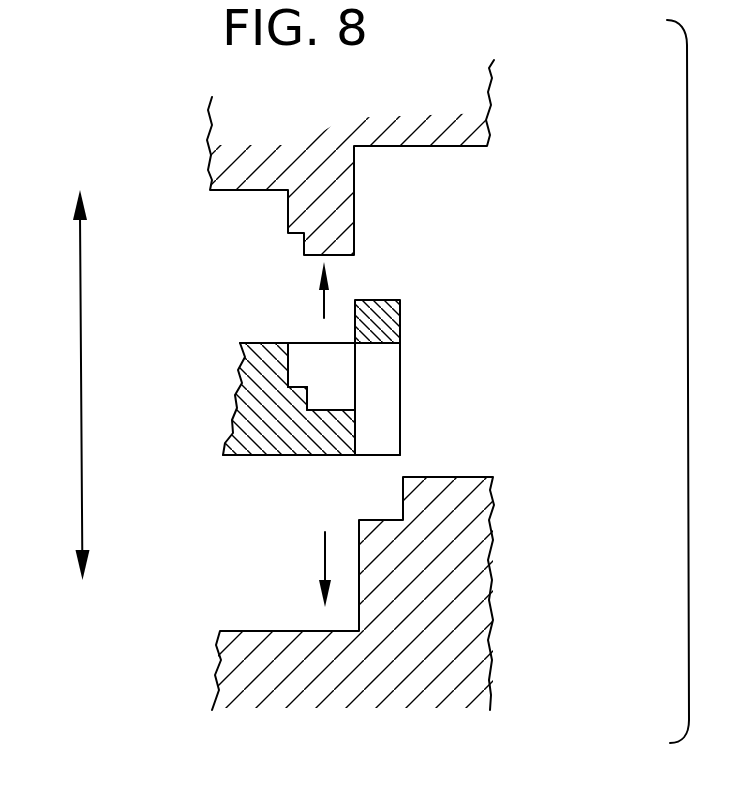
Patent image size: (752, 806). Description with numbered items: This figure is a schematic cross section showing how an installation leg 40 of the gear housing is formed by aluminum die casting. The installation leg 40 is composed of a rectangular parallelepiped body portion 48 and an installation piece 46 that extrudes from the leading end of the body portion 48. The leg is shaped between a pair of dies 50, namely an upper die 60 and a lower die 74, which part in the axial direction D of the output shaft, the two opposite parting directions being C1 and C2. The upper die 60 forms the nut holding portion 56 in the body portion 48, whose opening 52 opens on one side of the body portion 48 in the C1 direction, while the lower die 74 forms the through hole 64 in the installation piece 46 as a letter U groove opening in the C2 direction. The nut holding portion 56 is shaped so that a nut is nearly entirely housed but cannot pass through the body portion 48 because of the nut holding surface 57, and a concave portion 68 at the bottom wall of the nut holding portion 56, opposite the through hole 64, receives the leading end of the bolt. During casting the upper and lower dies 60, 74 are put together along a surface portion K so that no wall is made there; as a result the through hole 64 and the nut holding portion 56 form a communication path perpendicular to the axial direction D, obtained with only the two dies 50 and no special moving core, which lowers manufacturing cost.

The installation leg 40 is at (269, 470).
The installation piece 46 is at (393, 312).
The body portion 48 is at (242, 399).
The dies 50 is at (414, 385).
The opening 52 is at (332, 343).
The nut holding portion 56 is at (345, 374).
The nut holding surface 57 is at (327, 413).
The upper die 60 is at (490, 100).
The through hole 64 is at (386, 402).
The concave portion 68 is at (296, 358).
The lower die 74 is at (488, 636).
The surface portion K is at (356, 400).
The C1 direction C1 is at (318, 300).
The C2 direction C2 is at (322, 556).
The axial direction D is at (80, 352).